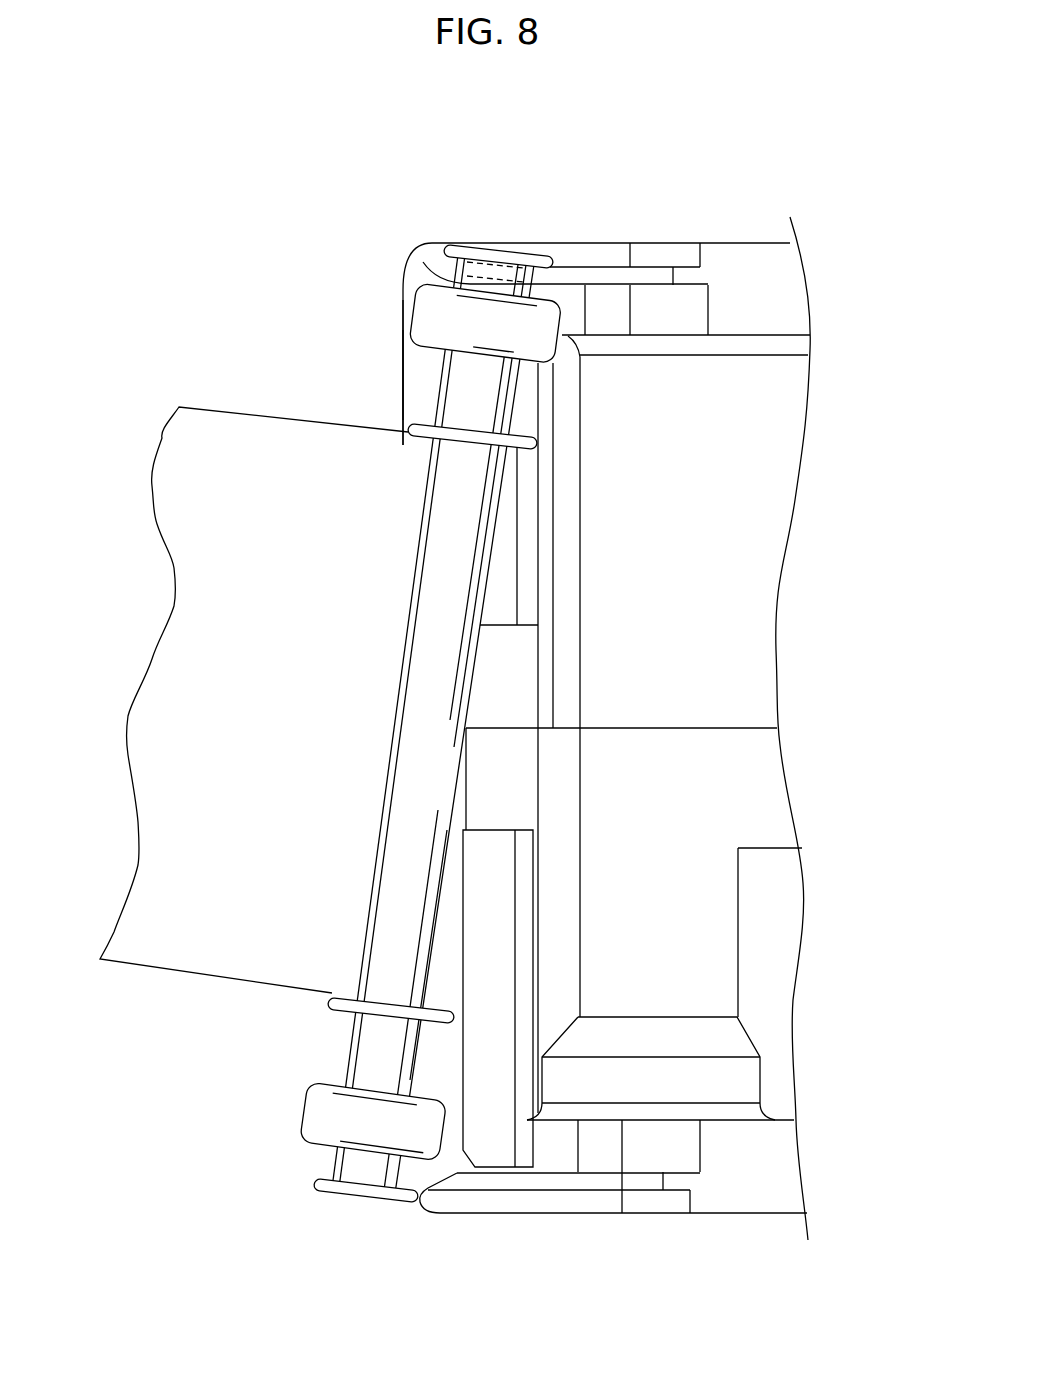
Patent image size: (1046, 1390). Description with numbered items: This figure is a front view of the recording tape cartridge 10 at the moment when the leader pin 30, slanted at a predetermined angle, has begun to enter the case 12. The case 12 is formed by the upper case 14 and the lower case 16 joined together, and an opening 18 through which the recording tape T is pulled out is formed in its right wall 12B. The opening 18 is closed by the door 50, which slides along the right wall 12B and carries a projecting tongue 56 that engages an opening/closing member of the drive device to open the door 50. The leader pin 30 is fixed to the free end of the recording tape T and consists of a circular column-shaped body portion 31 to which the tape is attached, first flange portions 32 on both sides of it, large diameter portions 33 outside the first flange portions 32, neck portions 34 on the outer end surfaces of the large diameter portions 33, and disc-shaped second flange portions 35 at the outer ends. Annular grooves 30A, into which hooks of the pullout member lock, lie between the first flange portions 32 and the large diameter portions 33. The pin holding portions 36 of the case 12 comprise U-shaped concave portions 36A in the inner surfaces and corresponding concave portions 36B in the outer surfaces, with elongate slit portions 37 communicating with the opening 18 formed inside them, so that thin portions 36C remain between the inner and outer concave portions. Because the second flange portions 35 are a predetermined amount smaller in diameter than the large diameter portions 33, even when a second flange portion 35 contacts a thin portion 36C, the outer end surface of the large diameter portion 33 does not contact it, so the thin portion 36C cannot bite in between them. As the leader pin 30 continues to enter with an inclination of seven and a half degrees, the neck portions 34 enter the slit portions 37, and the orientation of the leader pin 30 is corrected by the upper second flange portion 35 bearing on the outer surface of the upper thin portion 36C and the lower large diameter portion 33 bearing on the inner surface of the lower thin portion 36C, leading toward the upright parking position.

The recording tape cartridge 10 is at (735, 137).
The case 12 is at (793, 728).
The upper case 14 is at (727, 243).
The lower case 16 is at (725, 1213).
The right wall 12B is at (407, 299).
The opening 18 is at (402, 398).
The leader pin 30 is at (390, 709).
The annular grooves 30A is at (457, 402).
The body portion 31 is at (416, 695).
The first flange portions 32 is at (408, 441).
The large diameter portions 33 is at (430, 322).
The neck portions 34 is at (470, 273).
The second flange portions 35 is at (448, 249).
The pin holding portions 36 is at (683, 243).
The concave portions 36A is at (682, 288).
The concave portions 36B is at (617, 267).
The thin portions 36C is at (573, 277).
The slit portions 37 is at (655, 287).
The door 50 is at (522, 872).
The tongue 56 is at (510, 680).
The recording tape T is at (155, 733).